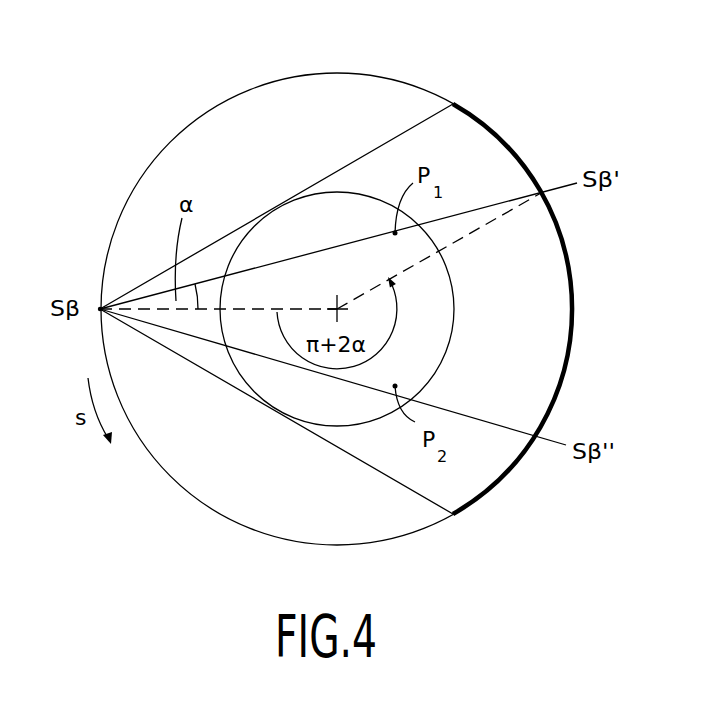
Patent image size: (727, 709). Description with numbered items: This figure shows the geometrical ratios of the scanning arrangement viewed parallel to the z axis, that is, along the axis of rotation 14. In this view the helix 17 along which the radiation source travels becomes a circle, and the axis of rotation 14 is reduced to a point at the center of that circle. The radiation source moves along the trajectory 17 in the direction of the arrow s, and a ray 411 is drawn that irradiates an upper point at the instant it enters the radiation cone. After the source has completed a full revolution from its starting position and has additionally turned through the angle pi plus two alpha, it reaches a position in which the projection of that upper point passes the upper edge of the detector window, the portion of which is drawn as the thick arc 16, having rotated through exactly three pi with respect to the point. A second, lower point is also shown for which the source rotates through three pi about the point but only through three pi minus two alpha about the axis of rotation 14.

The axis of rotation 14 is at (332, 305).
The detector unit 16 is at (503, 140).
The helix 17 is at (378, 77).
The ray 411 is at (283, 262).